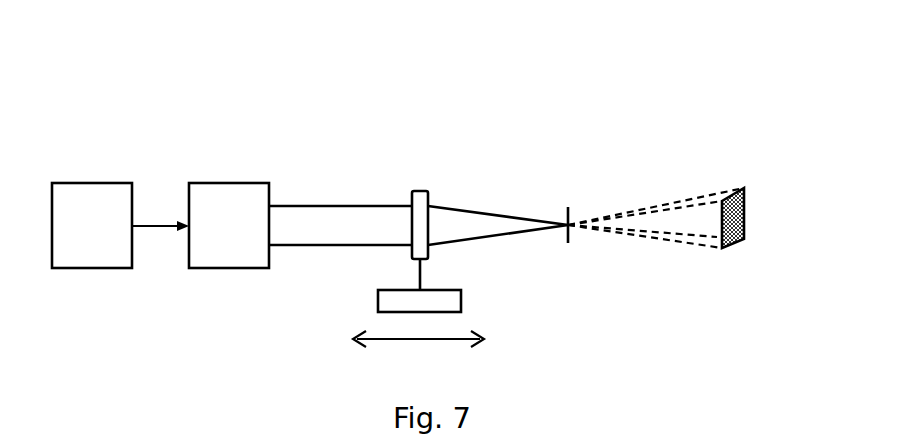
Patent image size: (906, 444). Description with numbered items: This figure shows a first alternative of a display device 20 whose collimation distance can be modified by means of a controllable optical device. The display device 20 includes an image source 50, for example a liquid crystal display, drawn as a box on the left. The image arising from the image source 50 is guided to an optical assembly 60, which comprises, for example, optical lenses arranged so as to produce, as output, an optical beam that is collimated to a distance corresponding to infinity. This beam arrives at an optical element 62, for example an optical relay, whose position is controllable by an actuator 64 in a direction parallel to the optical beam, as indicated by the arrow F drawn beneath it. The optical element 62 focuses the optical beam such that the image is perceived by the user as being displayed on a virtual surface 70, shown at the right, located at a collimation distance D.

The display device 20 is at (276, 71).
The image source 50 is at (97, 183).
The optical assembly 60 is at (232, 183).
The optical element 62 is at (417, 191).
The actuator 64 is at (461, 303).
The virtual surface 70 is at (727, 243).
The collimation distance D is at (751, 152).
The arrow F is at (453, 341).